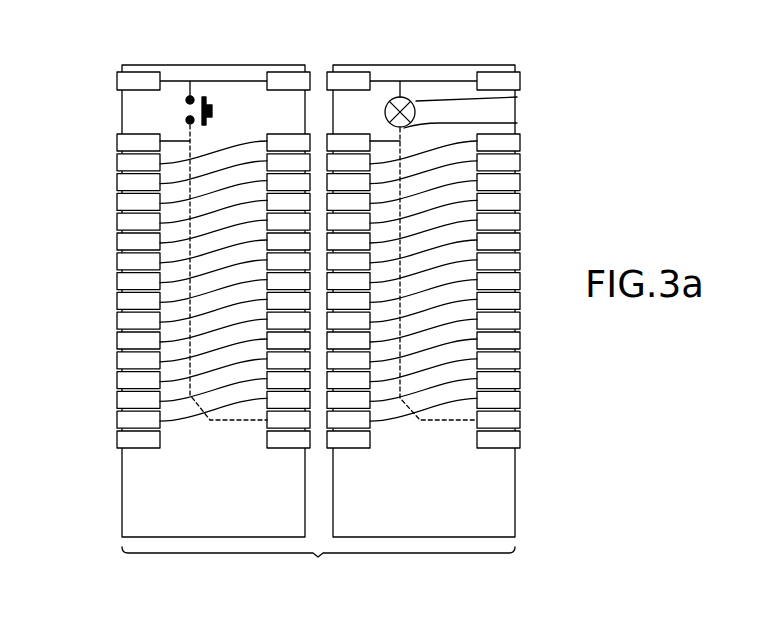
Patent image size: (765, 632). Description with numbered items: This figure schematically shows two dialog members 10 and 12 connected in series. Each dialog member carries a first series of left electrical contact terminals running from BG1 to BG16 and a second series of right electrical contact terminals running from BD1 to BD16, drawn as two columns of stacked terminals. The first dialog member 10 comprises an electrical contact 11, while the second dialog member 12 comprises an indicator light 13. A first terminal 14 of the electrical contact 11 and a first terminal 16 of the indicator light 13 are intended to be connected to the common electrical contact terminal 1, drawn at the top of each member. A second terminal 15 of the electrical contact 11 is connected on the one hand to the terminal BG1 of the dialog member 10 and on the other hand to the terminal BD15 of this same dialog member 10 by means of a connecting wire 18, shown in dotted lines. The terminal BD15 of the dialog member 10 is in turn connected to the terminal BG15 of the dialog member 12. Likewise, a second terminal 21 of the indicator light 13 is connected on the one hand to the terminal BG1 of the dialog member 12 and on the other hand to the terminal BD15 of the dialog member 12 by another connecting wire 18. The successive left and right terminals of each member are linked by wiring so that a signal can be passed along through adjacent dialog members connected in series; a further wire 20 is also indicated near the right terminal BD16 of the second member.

The first dialog member 10 is at (179, 58).
The second dialog member 12 is at (500, 58).
The common electrical contact terminal 1 is at (283, 80).
The electrical contact 11 is at (214, 111).
The first terminal of the electrical contact 14 is at (186, 101).
The second terminal of the electrical contact 15 is at (186, 121).
The first terminal of the indicator light 16 is at (398, 95).
The indicator light 13 is at (517, 97).
The second terminal of the indicator light 21 is at (517, 123).
The connecting wire 18 is at (168, 190).
The connecting wire 20 is at (452, 403).
The left terminal BG1 is at (125, 142).
The left terminal BG15 is at (343, 420).
The left terminal BG16 is at (126, 442).
The right terminal BD1 is at (507, 141).
The right terminal BD15 is at (507, 423).
The right terminal BD16 is at (507, 440).